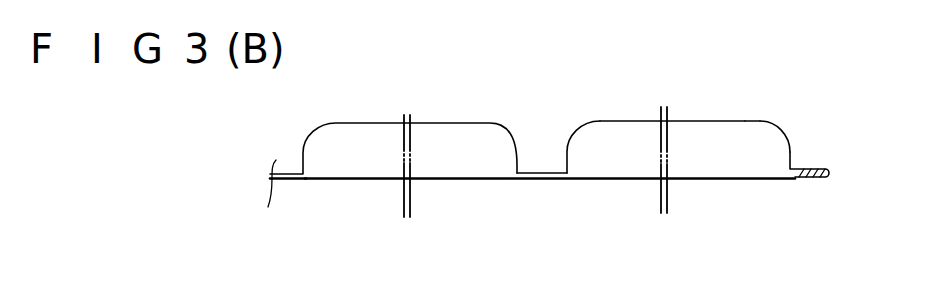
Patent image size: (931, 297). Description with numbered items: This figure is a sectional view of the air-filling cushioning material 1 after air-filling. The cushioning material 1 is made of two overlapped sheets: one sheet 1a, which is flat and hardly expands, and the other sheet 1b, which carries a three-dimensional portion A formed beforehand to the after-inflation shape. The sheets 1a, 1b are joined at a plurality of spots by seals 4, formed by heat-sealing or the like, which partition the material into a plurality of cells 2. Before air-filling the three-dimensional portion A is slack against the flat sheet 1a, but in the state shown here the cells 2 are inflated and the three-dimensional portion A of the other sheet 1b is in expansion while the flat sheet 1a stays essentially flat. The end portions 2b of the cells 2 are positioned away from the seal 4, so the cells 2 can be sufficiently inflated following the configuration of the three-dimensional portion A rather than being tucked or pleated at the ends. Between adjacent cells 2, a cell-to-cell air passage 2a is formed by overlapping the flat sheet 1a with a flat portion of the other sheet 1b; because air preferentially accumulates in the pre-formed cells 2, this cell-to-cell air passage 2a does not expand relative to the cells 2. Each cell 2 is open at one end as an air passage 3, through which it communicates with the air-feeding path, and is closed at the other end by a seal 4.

The air-filling cushioning material 1 is at (337, 93).
The one sheet 1a is at (712, 178).
The other sheet 1b is at (700, 120).
The three-dimensional portion A is at (750, 120).
The cell 2 is at (437, 123).
The cell-to-cell air passage 2a is at (540, 172).
The end portion of the cell 2b is at (790, 147).
The air passage 3 is at (287, 181).
The seal 4 is at (810, 179).